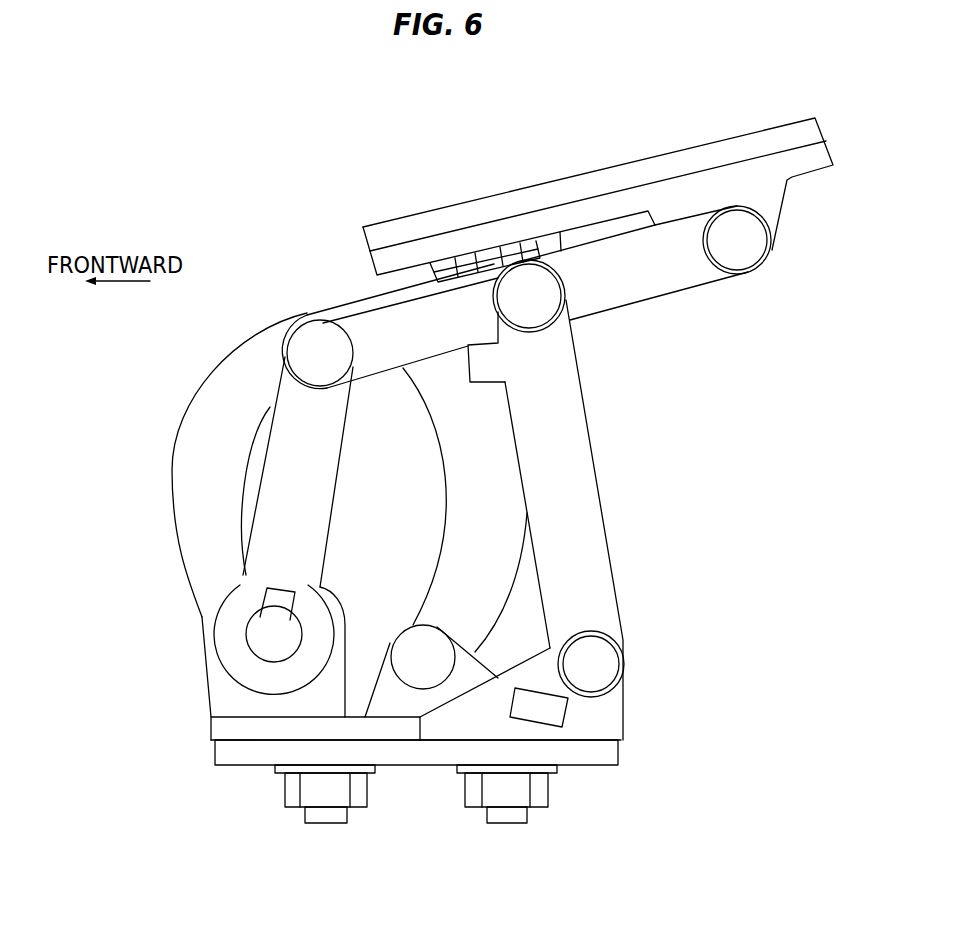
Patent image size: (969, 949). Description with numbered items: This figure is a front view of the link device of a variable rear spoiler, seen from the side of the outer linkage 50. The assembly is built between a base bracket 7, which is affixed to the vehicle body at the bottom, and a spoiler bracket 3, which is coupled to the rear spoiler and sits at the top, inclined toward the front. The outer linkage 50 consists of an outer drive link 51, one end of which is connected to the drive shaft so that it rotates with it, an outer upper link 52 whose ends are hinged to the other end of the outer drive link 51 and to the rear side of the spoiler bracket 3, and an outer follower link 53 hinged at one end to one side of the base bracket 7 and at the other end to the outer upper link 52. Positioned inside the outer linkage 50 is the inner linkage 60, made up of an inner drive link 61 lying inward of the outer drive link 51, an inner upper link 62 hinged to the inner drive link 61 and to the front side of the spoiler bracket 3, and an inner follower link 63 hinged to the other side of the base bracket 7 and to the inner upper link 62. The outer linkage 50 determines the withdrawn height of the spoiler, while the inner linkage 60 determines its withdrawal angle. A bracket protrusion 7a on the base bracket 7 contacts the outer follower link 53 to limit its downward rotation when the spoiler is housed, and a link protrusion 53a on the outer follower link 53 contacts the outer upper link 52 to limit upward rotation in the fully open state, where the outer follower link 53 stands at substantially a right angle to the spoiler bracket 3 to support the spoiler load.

The spoiler bracket 3 is at (647, 175).
The base bracket 7 is at (397, 733).
The bracket protrusion 7a is at (538, 708).
The outer linkage 50 is at (648, 616).
The outer drive link 51 is at (280, 535).
The outer upper link 52 is at (680, 273).
The outer follower link 53 is at (592, 555).
The link protrusion 53a is at (483, 367).
The inner linkage 60 is at (186, 393).
The inner drive link 61 is at (193, 499).
The inner upper link 62 is at (345, 303).
The inner follower link 63 is at (502, 468).